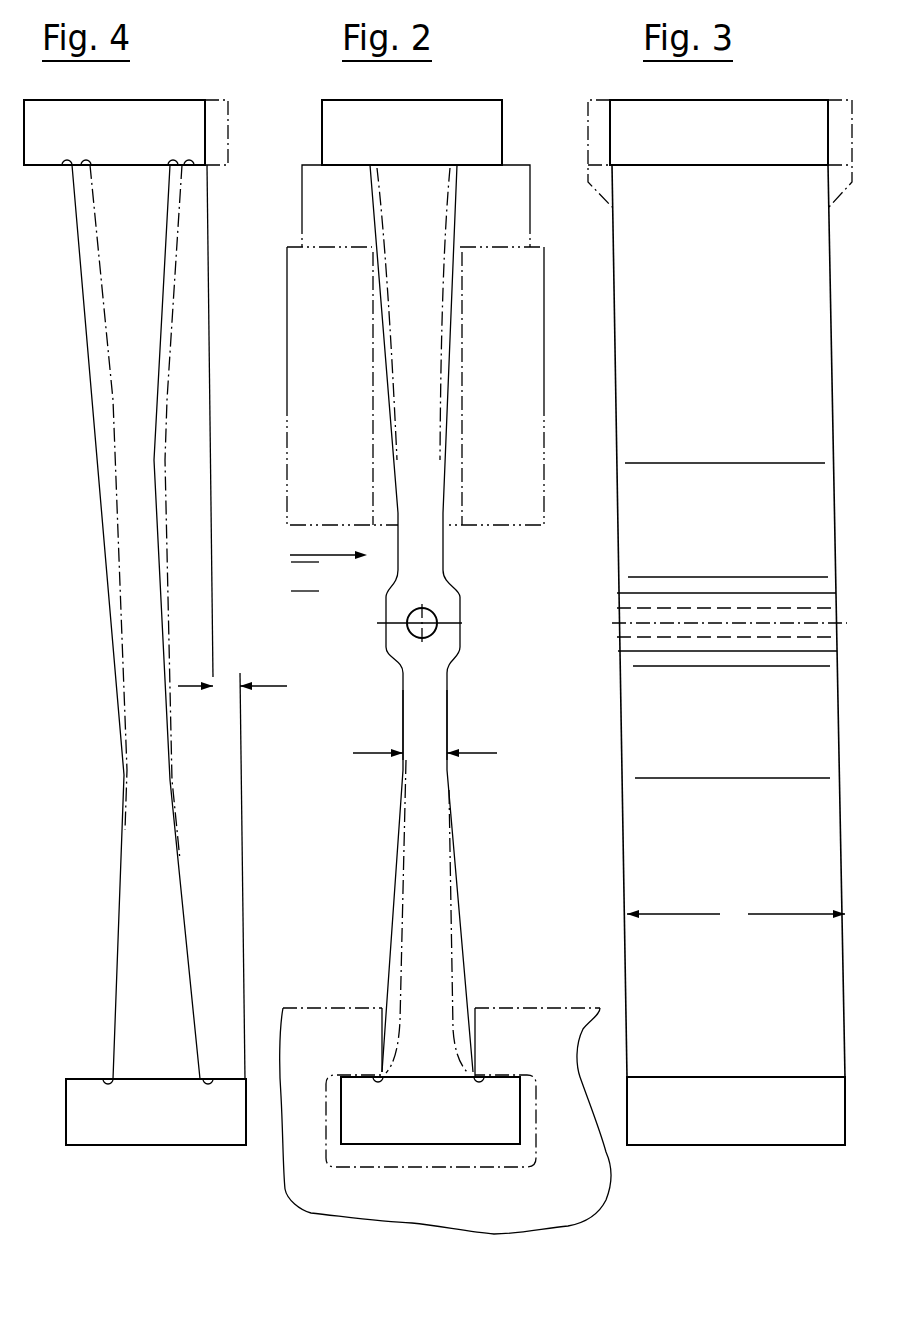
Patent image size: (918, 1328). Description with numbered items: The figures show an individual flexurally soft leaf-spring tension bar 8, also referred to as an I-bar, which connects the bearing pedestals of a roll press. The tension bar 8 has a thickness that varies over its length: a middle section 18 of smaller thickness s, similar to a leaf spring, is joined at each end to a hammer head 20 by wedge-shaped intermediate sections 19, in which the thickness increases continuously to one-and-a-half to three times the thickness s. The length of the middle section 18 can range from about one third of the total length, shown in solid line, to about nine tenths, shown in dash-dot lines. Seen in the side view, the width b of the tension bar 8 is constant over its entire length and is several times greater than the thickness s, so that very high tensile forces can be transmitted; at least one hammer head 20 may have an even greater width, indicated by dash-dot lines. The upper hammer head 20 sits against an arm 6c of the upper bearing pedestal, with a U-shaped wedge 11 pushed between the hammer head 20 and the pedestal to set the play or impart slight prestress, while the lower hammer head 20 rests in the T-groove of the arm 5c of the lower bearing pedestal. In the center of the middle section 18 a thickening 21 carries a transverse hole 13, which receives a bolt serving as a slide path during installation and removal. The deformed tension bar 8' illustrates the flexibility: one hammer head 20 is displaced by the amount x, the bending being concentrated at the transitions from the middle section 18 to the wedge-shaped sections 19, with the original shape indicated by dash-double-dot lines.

In FIG. 2, the tension bar 8 is at (423, 627).
In FIG. 3, the tension bar 8 is at (715, 583).
In FIG. 4, the tension bar in deformed condition 8' is at (155, 589).
In FIG. 4, the hammer head 20 is at (125, 150).
In FIG. 2, the hammer head 20 is at (488, 132).
In FIG. 3, the hammer head 20 is at (724, 150).
In FIG. 4, the wedge-shaped intermediate section 19 is at (143, 293).
In FIG. 2, the wedge-shaped intermediate section 19 is at (431, 238).
In FIG. 2, the U-shaped wedge 11 is at (507, 212).
In FIG. 2, the arm of bearing pedestal 6c is at (303, 478).
In FIG. 2, the thickening 21 is at (448, 607).
In FIG. 2, the transverse hole 13 is at (413, 633).
In FIG. 3, the transverse hole 13 is at (643, 608).
In FIG. 2, the middle section 18 is at (437, 727).
In FIG. 2, the arm of bearing pedestal 5c is at (529, 1021).